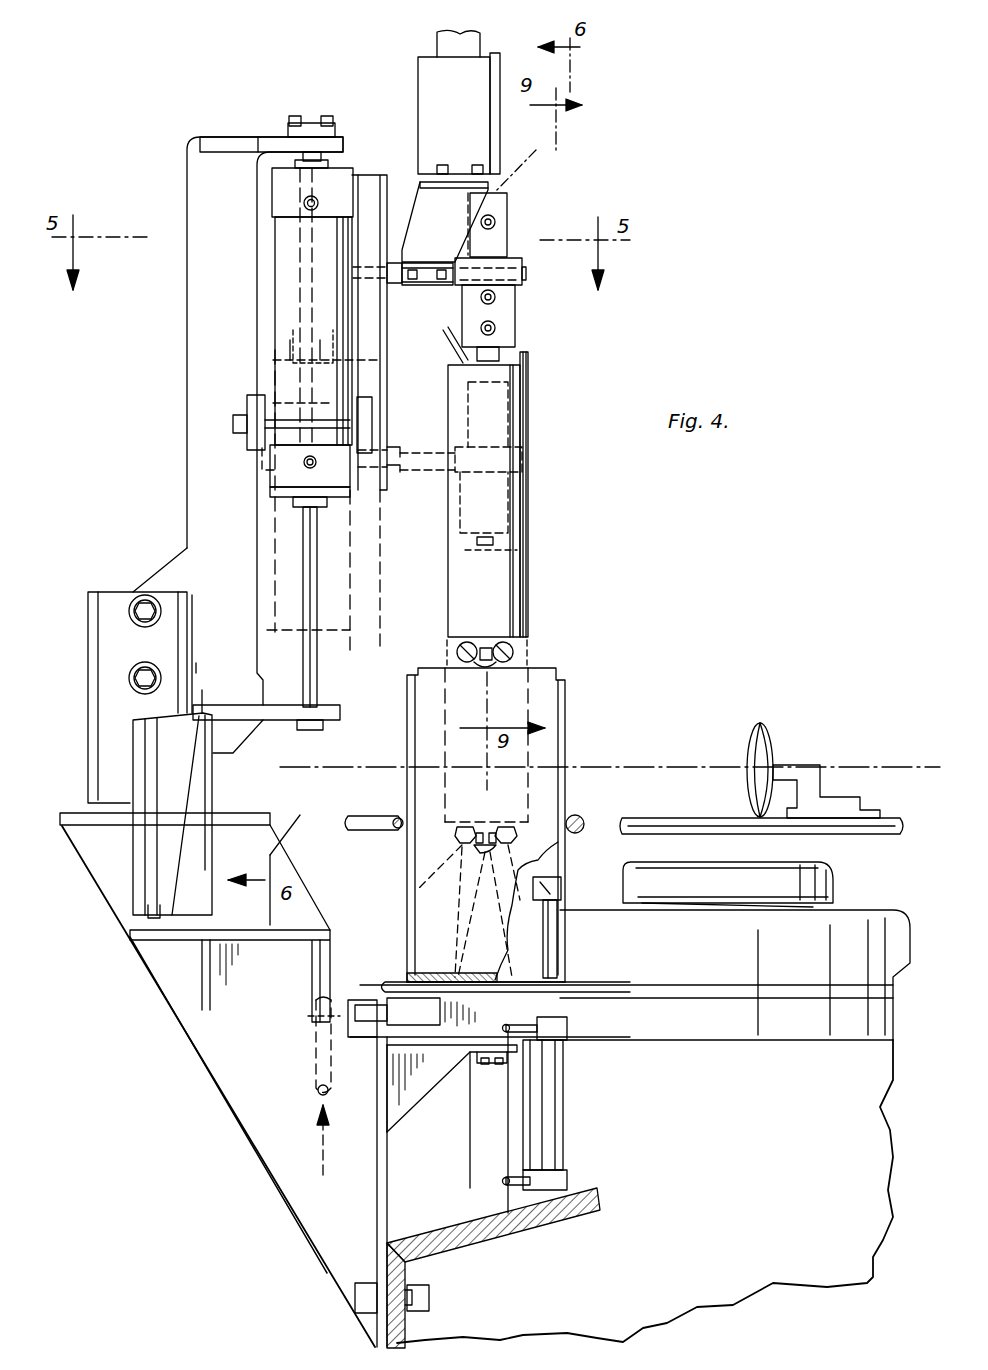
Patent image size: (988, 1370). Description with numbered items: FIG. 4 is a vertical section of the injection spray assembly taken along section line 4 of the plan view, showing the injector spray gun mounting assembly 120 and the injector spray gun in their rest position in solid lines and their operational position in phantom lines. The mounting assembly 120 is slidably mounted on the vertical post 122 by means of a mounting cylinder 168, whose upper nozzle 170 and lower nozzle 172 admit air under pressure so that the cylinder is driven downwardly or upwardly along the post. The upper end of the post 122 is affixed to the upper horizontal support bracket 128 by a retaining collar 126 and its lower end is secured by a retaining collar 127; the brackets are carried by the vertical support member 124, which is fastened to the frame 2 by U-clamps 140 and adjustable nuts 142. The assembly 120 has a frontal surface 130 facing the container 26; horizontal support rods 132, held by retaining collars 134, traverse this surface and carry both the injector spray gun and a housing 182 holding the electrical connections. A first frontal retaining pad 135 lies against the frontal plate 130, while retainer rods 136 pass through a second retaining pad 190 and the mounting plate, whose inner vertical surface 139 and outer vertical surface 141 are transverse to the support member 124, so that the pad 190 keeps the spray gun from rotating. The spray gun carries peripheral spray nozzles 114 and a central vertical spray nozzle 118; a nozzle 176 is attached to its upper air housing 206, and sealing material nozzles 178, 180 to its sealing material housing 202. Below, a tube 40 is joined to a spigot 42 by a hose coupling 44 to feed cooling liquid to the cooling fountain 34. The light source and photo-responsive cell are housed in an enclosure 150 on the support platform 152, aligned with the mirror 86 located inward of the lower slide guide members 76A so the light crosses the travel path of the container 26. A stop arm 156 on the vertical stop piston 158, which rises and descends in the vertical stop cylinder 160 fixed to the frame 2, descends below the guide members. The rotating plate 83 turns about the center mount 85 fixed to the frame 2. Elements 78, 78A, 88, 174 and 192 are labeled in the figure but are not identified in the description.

The frame 2 is at (772, 1116).
The section line 4 is at (447, 1216).
The container 26 is at (575, 728).
The cooling fountain 34 is at (447, 1012).
The tube 40 is at (320, 1078).
The spigot 42 is at (368, 1003).
The hose coupling 44 is at (312, 1038).
The outermost lower slide guide member 76A is at (735, 990).
The pin 78 is at (578, 814).
The rod 78A is at (392, 793).
The rotating plate 83 is at (805, 1040).
The center mount 85 is at (836, 878).
The mirror 86 is at (764, 743).
The bracket 88 is at (812, 766).
The spray nozzles 114 is at (456, 650).
The central vertical spray nozzle 118 is at (500, 664).
The injector spray gun mounting assembly 120 is at (380, 362).
The vertical post 122 is at (325, 155).
The vertical support member 124 is at (195, 282).
The retaining collar 126 is at (318, 118).
The retaining collar 127 is at (328, 725).
The upper horizontal support bracket 128 is at (232, 137).
The frontal surface 130 is at (405, 160).
The horizontal support rods 132 is at (398, 283).
The retaining collars 134 is at (433, 338).
The first frontal retaining pad 135 is at (400, 242).
The retainer rods 136 is at (272, 470).
The inner vertical surface 139 is at (292, 428).
The U-clamps 140 is at (118, 592).
The outer vertical surface 141 is at (252, 402).
The adjustable nuts 142 is at (140, 618).
The enclosure 150 is at (205, 791).
The support platform 152 is at (268, 940).
The stop arm 156 is at (562, 885).
The vertical stop piston 158 is at (565, 936).
The vertical stop cylinder 160 is at (568, 1102).
The mounting cylinder 168 is at (292, 248).
The upper nozzle 170 is at (304, 203).
The lower nozzle 172 is at (290, 465).
The cylinder 174 is at (532, 418).
The nozzle 176 is at (497, 218).
The sealing material nozzle 178 is at (496, 297).
The sealing material nozzle 180 is at (496, 328).
The housing 182 is at (430, 68).
The second frontal retainer pad 190 is at (366, 414).
The rail 192 is at (524, 258).
The sealing material housing 202 is at (510, 317).
The upper air housing 206 is at (510, 233).